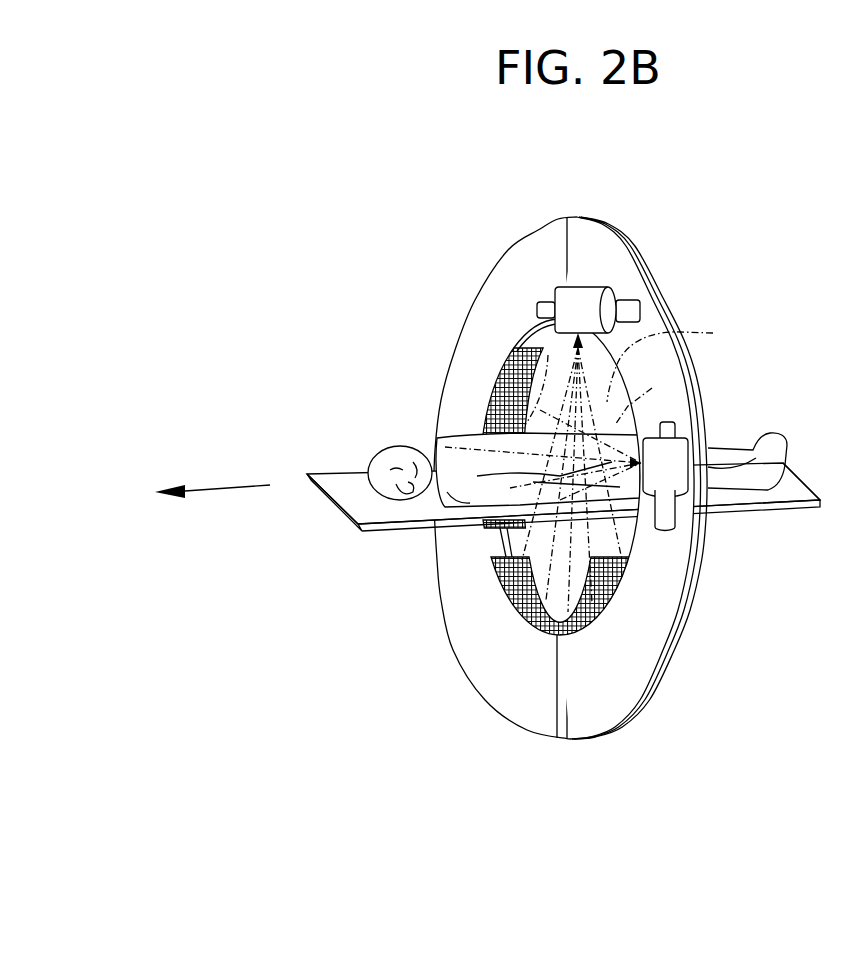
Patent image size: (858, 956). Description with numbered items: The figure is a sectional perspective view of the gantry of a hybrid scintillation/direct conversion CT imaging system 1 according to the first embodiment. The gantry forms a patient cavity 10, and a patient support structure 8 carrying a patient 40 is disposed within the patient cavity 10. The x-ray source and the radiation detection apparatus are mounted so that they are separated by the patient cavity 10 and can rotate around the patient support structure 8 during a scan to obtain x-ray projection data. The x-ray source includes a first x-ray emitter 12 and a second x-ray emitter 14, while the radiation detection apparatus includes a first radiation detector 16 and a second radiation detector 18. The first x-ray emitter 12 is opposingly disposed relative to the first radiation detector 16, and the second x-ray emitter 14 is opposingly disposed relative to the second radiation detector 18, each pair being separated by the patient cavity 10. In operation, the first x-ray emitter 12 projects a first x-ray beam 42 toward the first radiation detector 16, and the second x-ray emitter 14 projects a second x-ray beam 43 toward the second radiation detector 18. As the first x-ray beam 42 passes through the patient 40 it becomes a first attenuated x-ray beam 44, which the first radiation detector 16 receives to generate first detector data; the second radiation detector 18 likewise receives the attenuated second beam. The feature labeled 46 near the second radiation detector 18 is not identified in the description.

The hybrid scintillation/direct conversion CT imaging system 1 is at (630, 166).
The patient support structure 8 is at (367, 508).
The patient cavity 10 is at (487, 432).
The first x-ray emitter 12 is at (592, 290).
The second x-ray emitter 14 is at (672, 455).
The first radiation detector 16 is at (517, 353).
The second radiation detector 18 is at (507, 600).
The patient 40 is at (372, 452).
The first x-ray beam 42 is at (675, 362).
The second x-ray beam 43 is at (648, 397).
The first attenuated x-ray beam 44 is at (537, 333).
The detected beam 46 is at (596, 606).